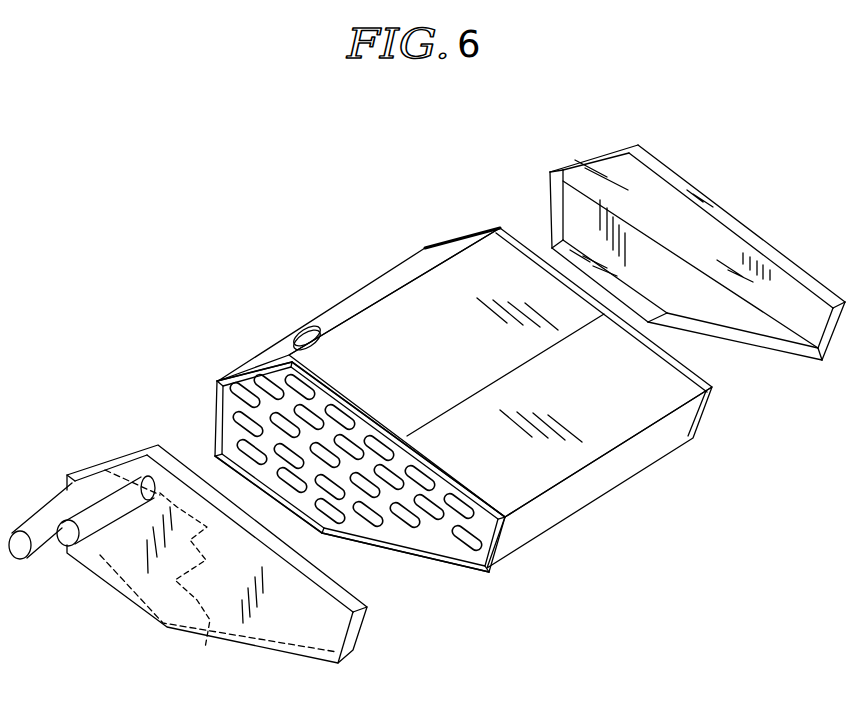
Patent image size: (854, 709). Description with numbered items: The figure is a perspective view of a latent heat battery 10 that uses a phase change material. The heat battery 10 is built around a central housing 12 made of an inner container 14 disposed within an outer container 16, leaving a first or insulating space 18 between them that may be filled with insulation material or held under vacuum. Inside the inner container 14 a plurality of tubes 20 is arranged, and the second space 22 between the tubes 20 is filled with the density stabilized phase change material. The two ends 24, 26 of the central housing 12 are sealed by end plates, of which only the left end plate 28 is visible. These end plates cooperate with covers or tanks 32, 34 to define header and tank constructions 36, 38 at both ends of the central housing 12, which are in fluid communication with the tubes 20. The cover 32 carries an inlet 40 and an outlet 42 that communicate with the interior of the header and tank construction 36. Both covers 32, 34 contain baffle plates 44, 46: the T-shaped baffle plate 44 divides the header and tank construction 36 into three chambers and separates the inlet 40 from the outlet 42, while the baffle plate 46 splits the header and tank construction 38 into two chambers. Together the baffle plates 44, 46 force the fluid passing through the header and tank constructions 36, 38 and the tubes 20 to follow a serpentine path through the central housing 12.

The heat battery 10 is at (458, 398).
The central housing 12 is at (500, 409).
The inner container 14 is at (356, 455).
The outer container 16 is at (543, 495).
The insulating space 18 is at (442, 473).
The tubes 20 is at (403, 518).
The second space 22 is at (435, 543).
The end of central housing 24 is at (210, 358).
The end of central housing 26 is at (475, 210).
The left end plate 28 is at (342, 543).
The cover 32 is at (217, 570).
The cover 34 is at (697, 252).
The header and tank construction 36 is at (56, 465).
The header and tank construction 38 is at (703, 442).
The inlet 40 is at (50, 547).
The outlet 42 is at (97, 530).
The T-shaped baffle plate 44 is at (210, 632).
The baffle plate 46 is at (668, 220).